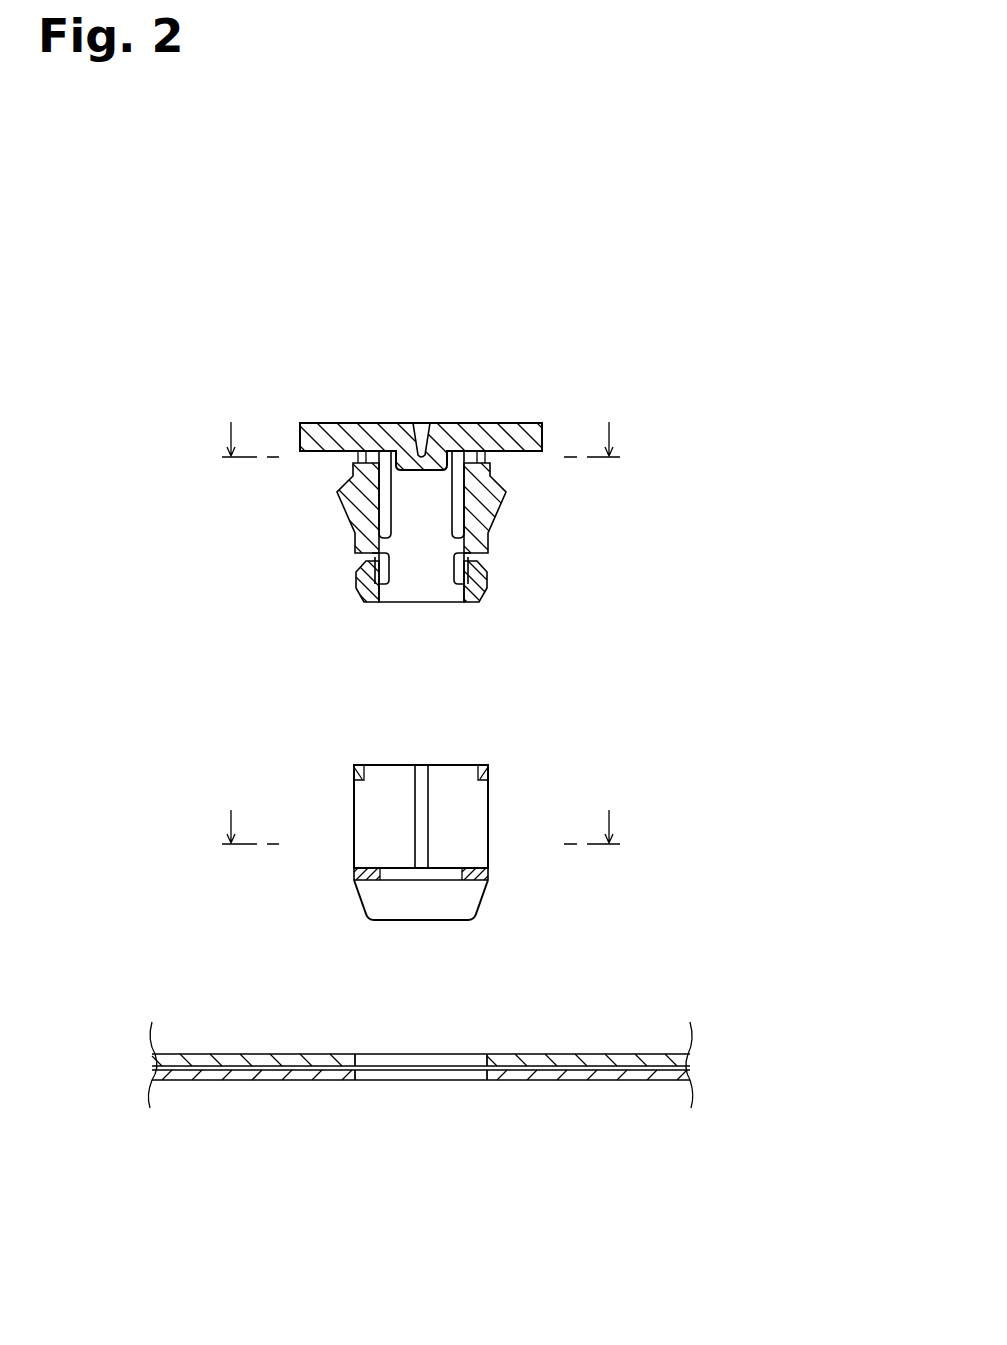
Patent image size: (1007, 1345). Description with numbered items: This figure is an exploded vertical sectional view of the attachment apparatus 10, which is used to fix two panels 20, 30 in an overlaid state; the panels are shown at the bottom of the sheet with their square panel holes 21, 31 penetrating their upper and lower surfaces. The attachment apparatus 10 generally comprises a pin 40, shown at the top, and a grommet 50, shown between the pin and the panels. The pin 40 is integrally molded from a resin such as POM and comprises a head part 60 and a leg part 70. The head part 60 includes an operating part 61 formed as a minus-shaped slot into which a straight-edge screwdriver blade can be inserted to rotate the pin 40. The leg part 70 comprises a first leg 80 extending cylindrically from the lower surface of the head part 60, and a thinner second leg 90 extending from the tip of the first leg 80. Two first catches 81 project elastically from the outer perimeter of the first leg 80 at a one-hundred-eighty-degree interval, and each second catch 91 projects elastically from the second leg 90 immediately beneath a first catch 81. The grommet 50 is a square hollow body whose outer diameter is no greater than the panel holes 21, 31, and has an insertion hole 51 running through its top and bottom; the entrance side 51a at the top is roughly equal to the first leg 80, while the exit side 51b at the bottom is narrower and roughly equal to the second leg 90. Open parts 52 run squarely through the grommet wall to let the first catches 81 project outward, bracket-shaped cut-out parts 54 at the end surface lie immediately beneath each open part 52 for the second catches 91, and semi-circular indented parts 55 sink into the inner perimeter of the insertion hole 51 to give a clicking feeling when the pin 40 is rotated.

The attachment apparatus 10 is at (197, 254).
The pin 40 is at (288, 388).
The head part 60 is at (470, 428).
The operating part 61 is at (423, 430).
The leg part 70 is at (580, 542).
The first leg 80 is at (488, 548).
The first catch 81 is at (338, 492).
The second leg 90 is at (480, 600).
The second catch 91 is at (362, 587).
The grommet 50 is at (316, 751).
The insertion hole 51 is at (395, 773).
The entrance side 51a is at (452, 765).
The exit side 51b is at (418, 880).
The open part 52 is at (365, 808).
The cut-out part 54 is at (375, 903).
The indented part 55 is at (425, 818).
The panel 20 is at (597, 1055).
The panel hole 21 is at (437, 1060).
The panel 30 is at (613, 1082).
The panel hole 31 is at (418, 1072).